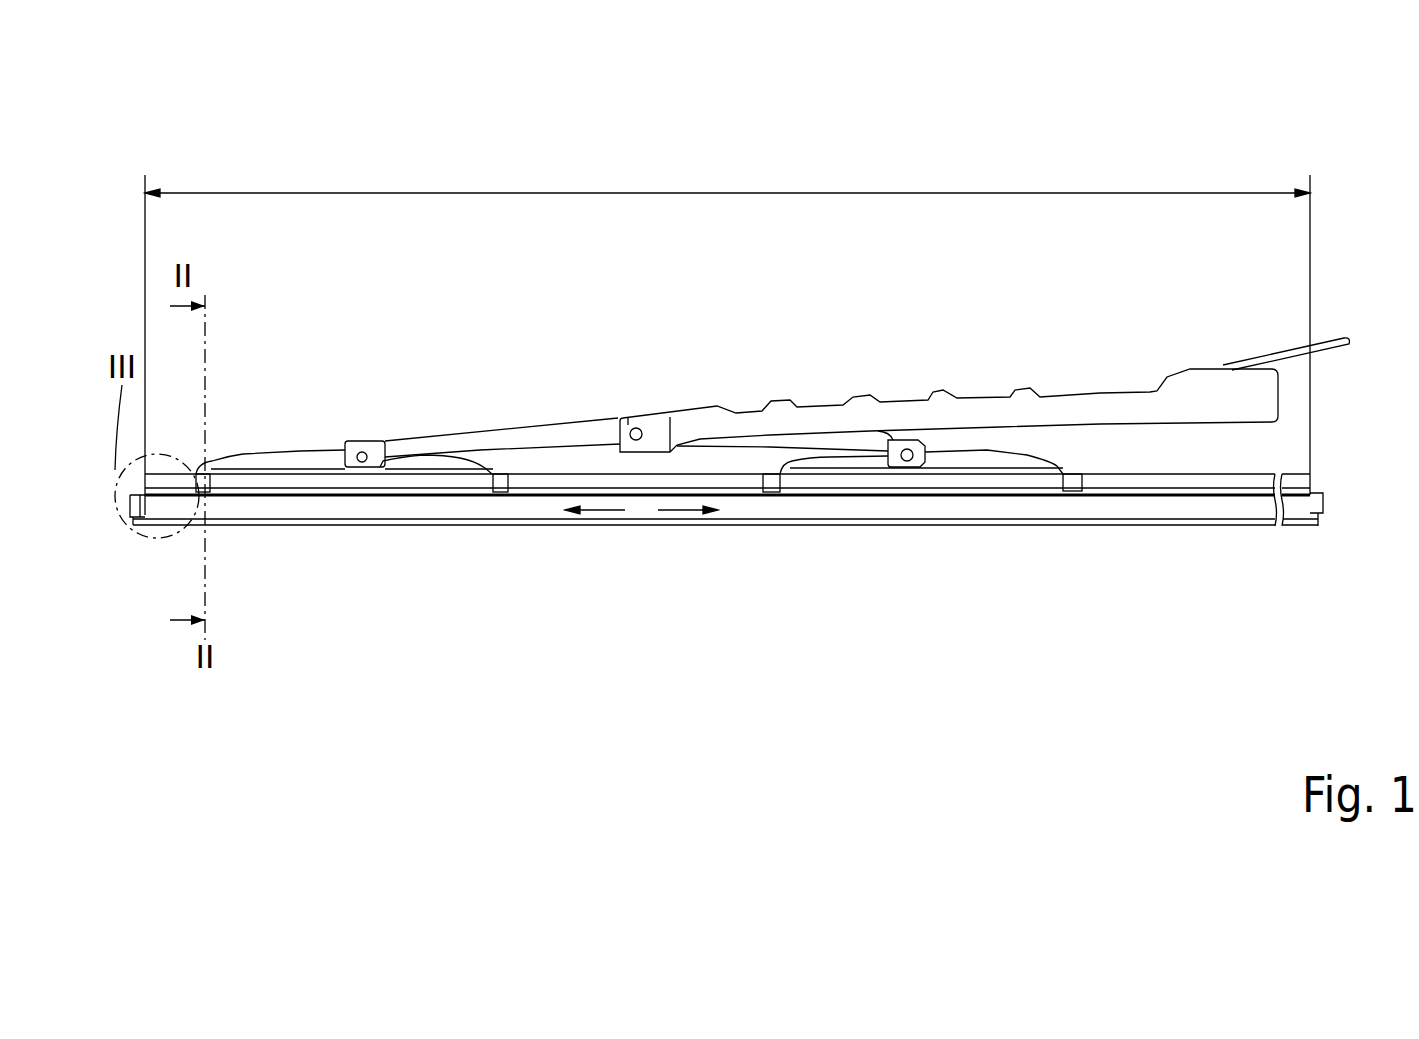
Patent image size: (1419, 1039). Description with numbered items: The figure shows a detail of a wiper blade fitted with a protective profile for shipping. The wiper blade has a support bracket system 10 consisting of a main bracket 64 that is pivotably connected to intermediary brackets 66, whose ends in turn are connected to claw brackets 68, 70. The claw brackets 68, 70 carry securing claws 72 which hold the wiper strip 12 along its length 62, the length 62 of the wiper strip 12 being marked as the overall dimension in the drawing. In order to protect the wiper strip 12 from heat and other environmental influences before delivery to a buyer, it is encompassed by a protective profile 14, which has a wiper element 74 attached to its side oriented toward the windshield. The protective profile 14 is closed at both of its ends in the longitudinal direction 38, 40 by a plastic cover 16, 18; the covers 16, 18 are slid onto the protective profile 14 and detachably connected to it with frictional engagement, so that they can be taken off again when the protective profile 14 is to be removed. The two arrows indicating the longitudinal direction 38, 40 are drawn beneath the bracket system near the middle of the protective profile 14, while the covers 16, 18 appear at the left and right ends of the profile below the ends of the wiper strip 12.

The support bracket system 10 is at (810, 393).
The wiper strip 12 is at (1294, 471).
The protective profile 14 is at (895, 503).
The plastic cover 16 is at (130, 507).
The plastic cover 18 is at (1318, 507).
The longitudinal direction 38 is at (611, 512).
The longitudinal direction 40 is at (690, 512).
The length of the wiper strip 62 is at (685, 193).
The main bracket 64 is at (1063, 403).
The intermediary brackets 66 is at (503, 438).
The claw bracket 68 is at (422, 463).
The claw bracket 70 is at (982, 458).
The securing claws 72 is at (773, 487).
The wiper element 74 is at (808, 522).